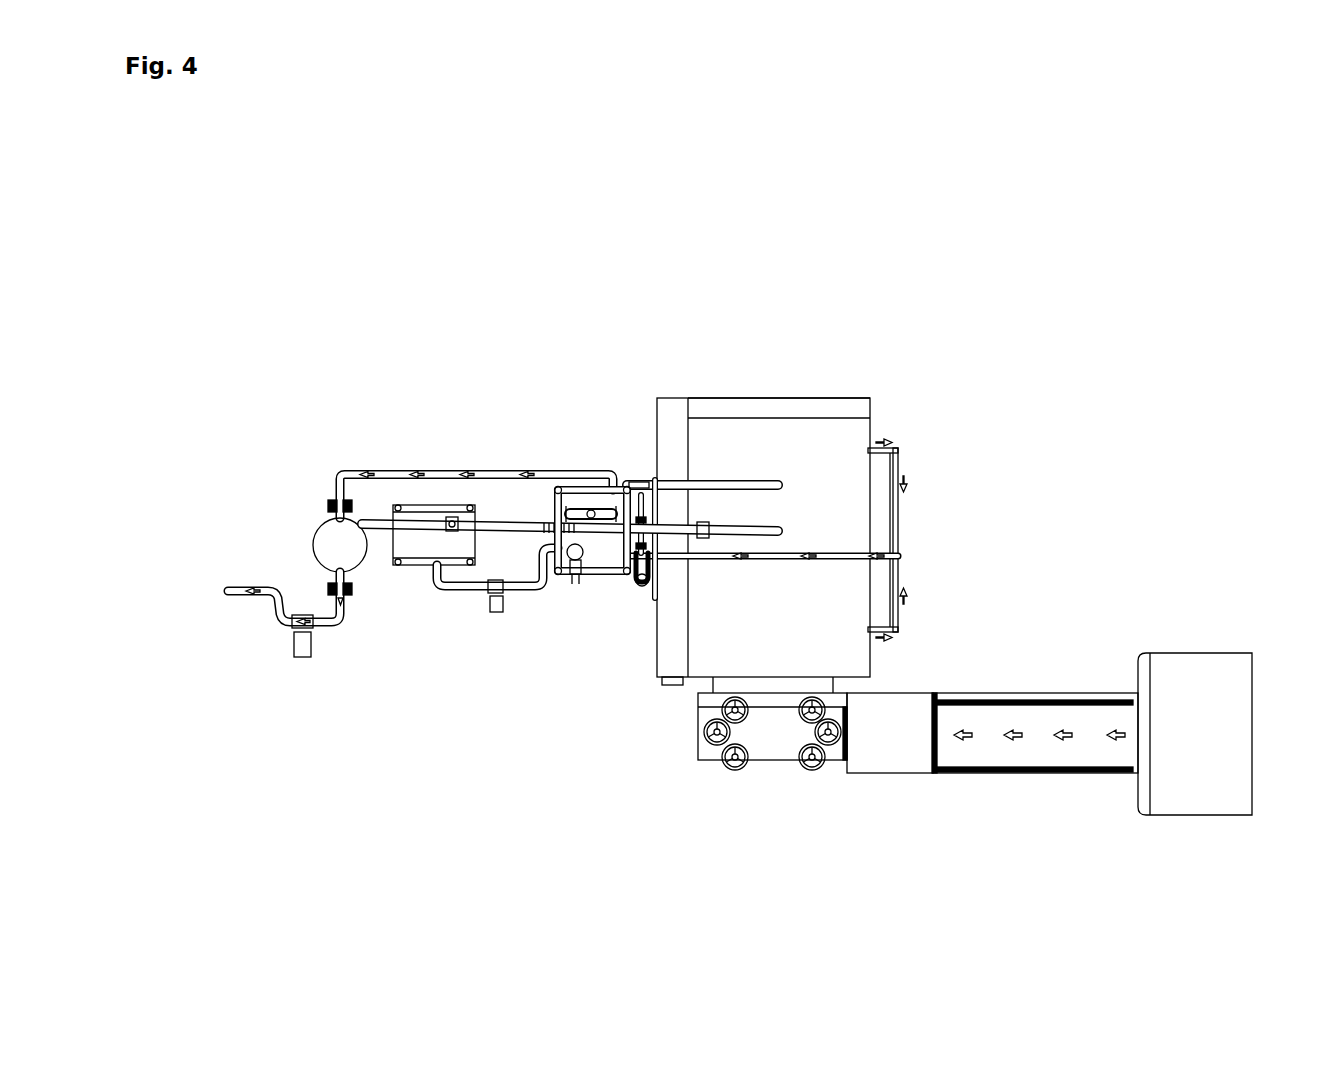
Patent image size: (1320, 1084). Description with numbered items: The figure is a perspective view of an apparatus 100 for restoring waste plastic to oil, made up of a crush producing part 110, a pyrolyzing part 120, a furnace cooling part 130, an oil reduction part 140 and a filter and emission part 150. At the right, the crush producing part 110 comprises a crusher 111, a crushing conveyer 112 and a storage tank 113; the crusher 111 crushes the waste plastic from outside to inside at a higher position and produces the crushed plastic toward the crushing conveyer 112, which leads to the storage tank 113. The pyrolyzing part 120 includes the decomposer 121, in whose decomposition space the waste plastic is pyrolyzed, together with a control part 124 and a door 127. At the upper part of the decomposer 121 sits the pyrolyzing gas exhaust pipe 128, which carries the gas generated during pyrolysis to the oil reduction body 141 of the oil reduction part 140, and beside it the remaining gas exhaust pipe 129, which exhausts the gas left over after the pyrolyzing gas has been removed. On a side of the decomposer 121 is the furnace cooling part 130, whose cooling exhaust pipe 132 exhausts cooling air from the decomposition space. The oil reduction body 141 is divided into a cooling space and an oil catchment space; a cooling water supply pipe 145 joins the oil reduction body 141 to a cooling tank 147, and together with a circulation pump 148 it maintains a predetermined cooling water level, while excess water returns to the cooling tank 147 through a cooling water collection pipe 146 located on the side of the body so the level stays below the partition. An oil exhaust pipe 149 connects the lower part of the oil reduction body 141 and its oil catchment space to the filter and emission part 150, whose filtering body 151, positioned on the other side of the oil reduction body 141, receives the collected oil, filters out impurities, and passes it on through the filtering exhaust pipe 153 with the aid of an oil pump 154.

The apparatus for restoring waste plastic to oil 100 is at (1068, 452).
The crush producing part 110 is at (1203, 643).
The crusher 111 is at (1203, 795).
The crushing conveyer 112 is at (1046, 774).
The storage tank 113 is at (886, 774).
The pyrolyzing part 120 is at (804, 393).
The decomposer 121 is at (738, 398).
The control part 124 is at (672, 686).
The door 127 is at (778, 745).
The pyrolyzing gas exhaust pipe 128 is at (653, 510).
The remaining gas exhaust pipe 129 is at (700, 482).
The furnace cooling part 130 is at (903, 444).
The cooling exhaust pipe 132 is at (856, 552).
The oil reduction part 140 is at (570, 488).
The oil reduction body 141 is at (600, 572).
The cooling water supply pipe 145 is at (452, 590).
The cooling water collection pipe 146 is at (495, 520).
The cooling tank 147 is at (418, 566).
The circulation pump 148 is at (494, 613).
The oil exhaust pipe 149 is at (390, 470).
The filter and emission part 150 is at (320, 515).
The filtering body 151 is at (314, 539).
The filtering exhaust pipe 153 is at (246, 596).
The oil pump 154 is at (304, 658).